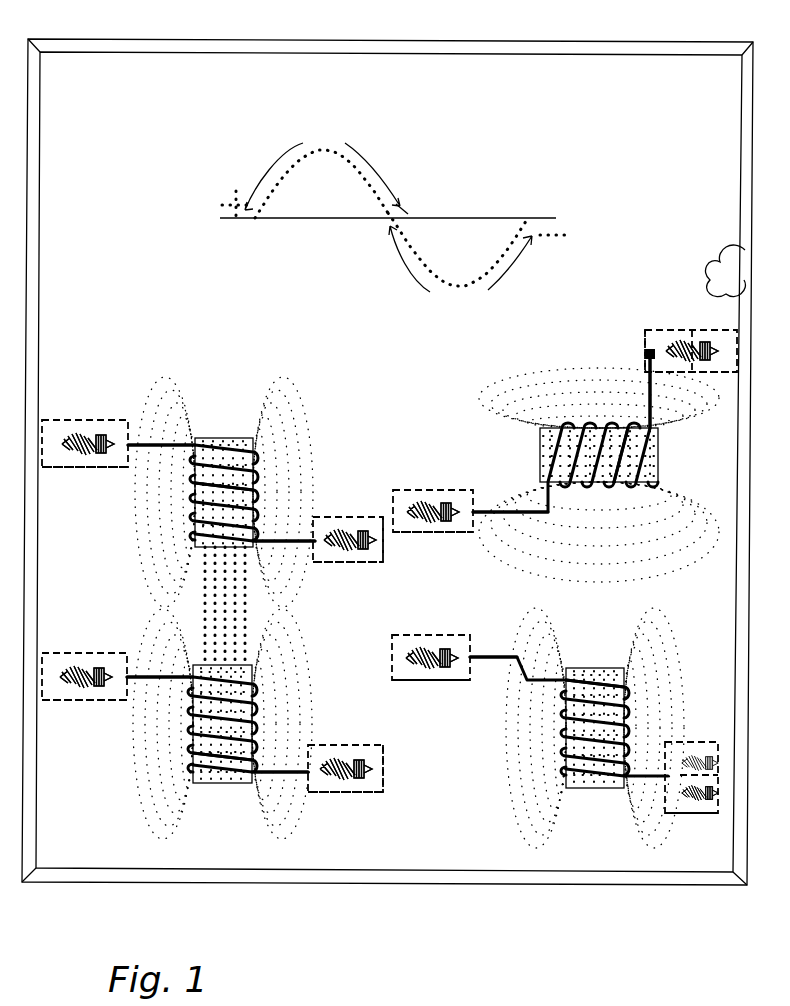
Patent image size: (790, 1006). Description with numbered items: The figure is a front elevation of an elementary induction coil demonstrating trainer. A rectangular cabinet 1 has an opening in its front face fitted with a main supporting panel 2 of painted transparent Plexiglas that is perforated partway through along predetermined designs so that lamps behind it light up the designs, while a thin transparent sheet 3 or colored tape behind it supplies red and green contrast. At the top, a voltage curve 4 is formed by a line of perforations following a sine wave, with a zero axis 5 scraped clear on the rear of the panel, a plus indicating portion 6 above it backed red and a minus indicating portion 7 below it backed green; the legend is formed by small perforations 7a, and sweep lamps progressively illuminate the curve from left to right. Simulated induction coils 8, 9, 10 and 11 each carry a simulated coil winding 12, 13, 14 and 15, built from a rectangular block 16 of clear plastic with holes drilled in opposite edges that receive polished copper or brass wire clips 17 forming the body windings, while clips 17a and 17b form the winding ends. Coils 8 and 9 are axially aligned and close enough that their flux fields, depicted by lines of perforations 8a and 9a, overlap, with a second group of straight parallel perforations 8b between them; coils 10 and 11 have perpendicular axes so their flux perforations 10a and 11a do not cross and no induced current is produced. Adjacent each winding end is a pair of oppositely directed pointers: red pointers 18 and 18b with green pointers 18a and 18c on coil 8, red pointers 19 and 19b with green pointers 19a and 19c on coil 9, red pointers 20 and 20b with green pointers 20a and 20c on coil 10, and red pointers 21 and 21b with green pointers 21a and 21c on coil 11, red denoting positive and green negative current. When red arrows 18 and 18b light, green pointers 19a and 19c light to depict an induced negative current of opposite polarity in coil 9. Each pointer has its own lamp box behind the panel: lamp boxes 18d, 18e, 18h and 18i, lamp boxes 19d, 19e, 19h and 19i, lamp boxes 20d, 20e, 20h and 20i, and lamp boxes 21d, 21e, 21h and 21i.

The cabinet or box structure 1 is at (650, 29).
The main supporting panel 2 is at (680, 62).
The transparent sheet or panel 3 is at (732, 273).
The voltage curve 4 is at (403, 209).
The zero axis 5 is at (546, 218).
The plus indicating portion 6 is at (348, 165).
The minus indicating portion 7 is at (480, 274).
The perforations forming the legend 7a is at (449, 54).
The simulated induction coil 8 is at (228, 521).
The lines of perforations depicting flux field 8a is at (300, 395).
The straight parallel perforations 8b is at (240, 620).
The simulated induction coil 9 is at (223, 724).
The lines of perforations depicting flux field 9a is at (313, 643).
The simulated induction coil 10 is at (565, 448).
The flux line perforations 10a is at (675, 556).
The simulated induction coil 11 is at (589, 714).
The flux line perforations 11a is at (660, 628).
The simulated coil winding 12 is at (224, 492).
The simulated coil winding 13 is at (222, 724).
The simulated coil winding 14 is at (599, 455).
The simulated coil winding 15 is at (595, 728).
The rectangular block 16 is at (688, 672).
The wire clips 17 is at (257, 506).
The wire clip 17a is at (148, 443).
The wire clip 17b is at (286, 545).
The red pointer 18 is at (80, 433).
The green pointer 18a is at (102, 438).
The red pointer 18b is at (342, 531).
The green pointer 18c is at (364, 535).
The lamp box 18d is at (60, 468).
The lamp box 18e is at (106, 468).
The lamp box 18h is at (368, 563).
The lamp box 18i is at (383, 555).
The red pointer 19 is at (100, 668).
The green pointer 19a is at (76, 665).
The red pointer 19b is at (360, 766).
The green pointer 19c is at (336, 762).
The lamp box 19d is at (95, 700).
The lamp box 19e is at (54, 700).
The lamp box 19h is at (380, 793).
The lamp box 19i is at (318, 794).
The red pointer 20 is at (450, 506).
The green pointer 20a is at (418, 506).
The red pointer 20b is at (710, 342).
The green pointer 20c is at (686, 338).
The lamp box 20d is at (456, 533).
The lamp box 20e is at (406, 533).
The lamp box 20h is at (701, 372).
The lamp box 20i is at (645, 346).
The red pointer 21 is at (444, 668).
The green pointer 21a is at (420, 672).
The red pointer 21b is at (718, 790).
The green pointer 21c is at (718, 758).
The lamp box 21d is at (452, 644).
The lamp box 21e is at (416, 640).
The lamp box 21h is at (688, 816).
The lamp box 21i is at (700, 745).